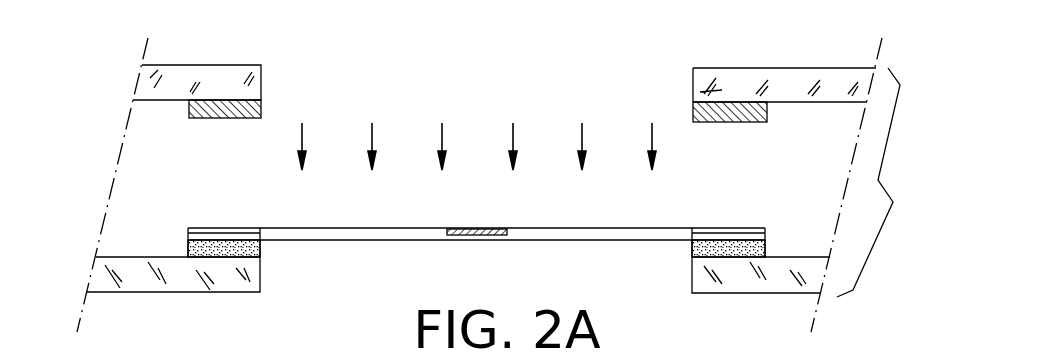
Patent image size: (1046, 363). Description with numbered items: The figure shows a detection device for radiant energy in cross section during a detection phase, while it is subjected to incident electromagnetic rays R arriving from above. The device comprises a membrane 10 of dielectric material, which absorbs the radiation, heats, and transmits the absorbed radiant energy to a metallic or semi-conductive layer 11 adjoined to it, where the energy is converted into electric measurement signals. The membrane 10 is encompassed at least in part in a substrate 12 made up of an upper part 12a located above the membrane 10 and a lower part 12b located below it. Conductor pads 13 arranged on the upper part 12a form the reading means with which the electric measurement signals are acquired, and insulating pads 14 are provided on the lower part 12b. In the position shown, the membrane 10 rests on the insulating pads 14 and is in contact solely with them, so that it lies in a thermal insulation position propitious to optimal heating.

The membrane 10 is at (320, 232).
The layer 11 is at (477, 228).
The substrate 12 is at (887, 182).
The upper part 12a is at (715, 90).
The lower part 12b is at (770, 275).
The conductor pads 13 is at (227, 112).
The insulating pads 14 is at (257, 247).
The incident electromagnetic rays R is at (374, 135).